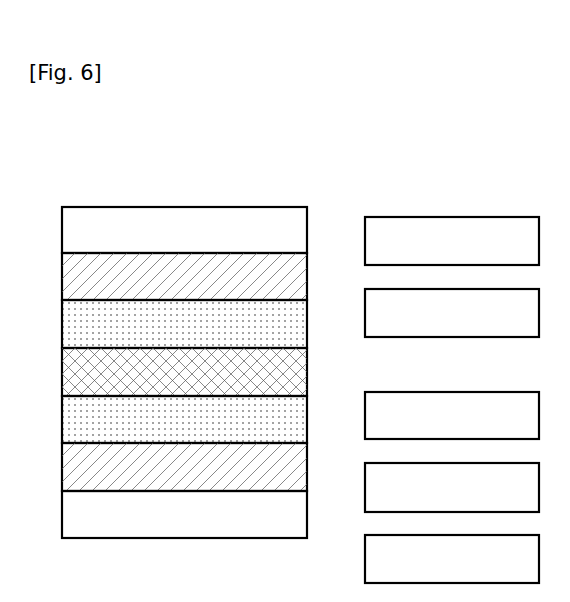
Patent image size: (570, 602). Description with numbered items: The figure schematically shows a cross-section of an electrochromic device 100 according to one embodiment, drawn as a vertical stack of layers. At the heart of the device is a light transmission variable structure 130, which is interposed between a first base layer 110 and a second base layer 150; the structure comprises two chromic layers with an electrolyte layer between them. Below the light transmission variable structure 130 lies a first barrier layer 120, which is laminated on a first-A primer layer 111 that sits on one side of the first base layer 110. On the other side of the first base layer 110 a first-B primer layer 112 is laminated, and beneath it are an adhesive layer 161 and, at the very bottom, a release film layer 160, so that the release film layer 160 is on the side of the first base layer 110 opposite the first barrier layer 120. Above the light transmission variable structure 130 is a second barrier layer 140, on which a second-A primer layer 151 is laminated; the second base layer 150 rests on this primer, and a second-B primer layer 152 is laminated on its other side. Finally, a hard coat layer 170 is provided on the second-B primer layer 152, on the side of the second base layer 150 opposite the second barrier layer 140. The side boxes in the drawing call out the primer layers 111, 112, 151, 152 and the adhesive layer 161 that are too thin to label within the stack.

The electrochromic device 100 is at (320, 144).
The hard coat layer 170 is at (184, 230).
The second base layer 150 is at (198, 276).
The second-B primer layer 152 is at (310, 252).
The second-A primer layer 151 is at (310, 299).
The second barrier layer 140 is at (184, 324).
The light transmission variable structure 130 is at (185, 372).
The first barrier layer 120 is at (184, 419).
The first base layer 110 is at (198, 467).
The first-A primer layer 111 is at (310, 442).
The first-B primer layer 112 is at (310, 490).
The release film layer 160 is at (184, 514).
The adhesive layer 161 is at (310, 492).